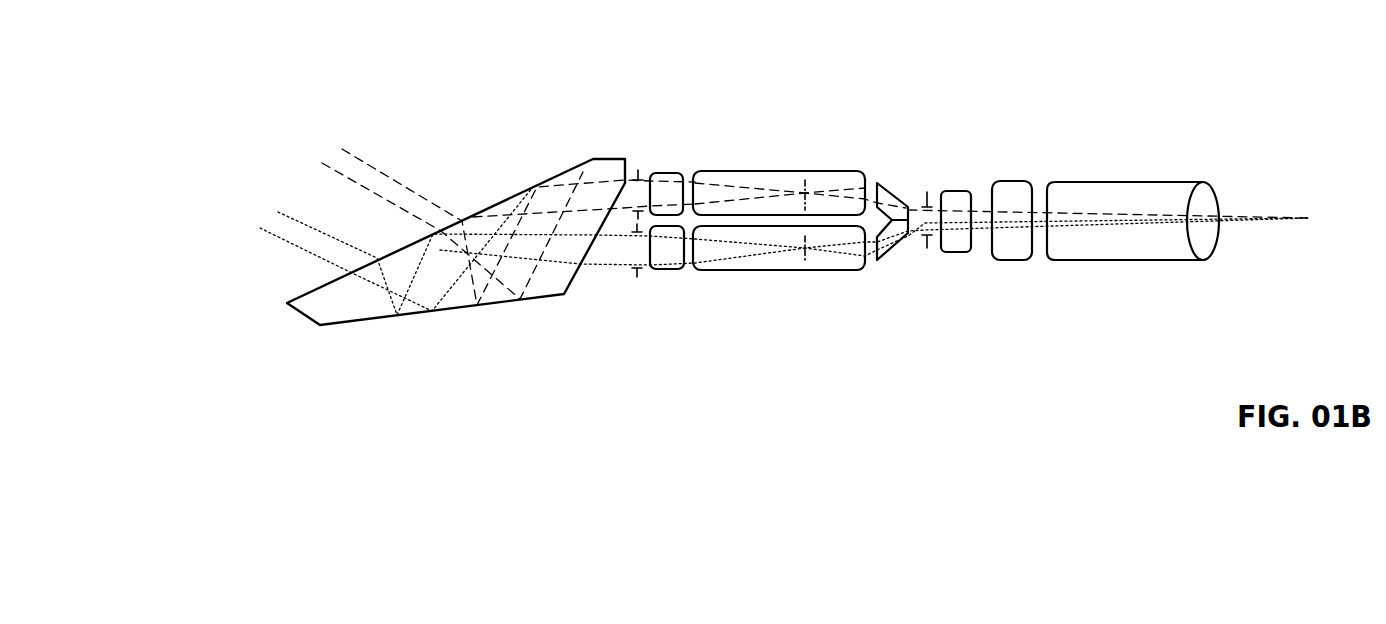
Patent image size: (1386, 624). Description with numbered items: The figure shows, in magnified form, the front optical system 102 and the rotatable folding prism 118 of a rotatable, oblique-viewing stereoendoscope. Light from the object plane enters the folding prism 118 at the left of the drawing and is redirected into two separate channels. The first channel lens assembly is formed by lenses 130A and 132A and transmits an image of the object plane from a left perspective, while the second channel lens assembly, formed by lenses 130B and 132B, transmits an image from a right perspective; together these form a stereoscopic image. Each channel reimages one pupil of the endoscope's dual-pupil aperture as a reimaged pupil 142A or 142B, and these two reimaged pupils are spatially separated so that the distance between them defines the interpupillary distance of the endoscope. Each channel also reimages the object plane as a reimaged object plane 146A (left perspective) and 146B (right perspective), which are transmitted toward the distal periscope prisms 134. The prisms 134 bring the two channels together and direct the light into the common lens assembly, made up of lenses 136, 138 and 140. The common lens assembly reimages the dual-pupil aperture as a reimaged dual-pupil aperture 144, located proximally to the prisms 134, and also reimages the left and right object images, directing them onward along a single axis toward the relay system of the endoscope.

The front optical system 102 is at (1150, 112).
The rotatable folding prism 118 is at (487, 311).
The lens 130A is at (675, 270).
The lens 130B is at (670, 172).
The lens 132A is at (747, 272).
The lens 132B is at (778, 171).
The distal periscope prisms 134 is at (900, 256).
The lens 136 is at (958, 253).
The lens 138 is at (1018, 262).
The lens 140 is at (1123, 261).
The reimaged pupil 142A is at (629, 280).
The reimaged pupil 142B is at (647, 154).
The reimaged dual-pupil aperture 144 is at (922, 180).
The reimaged object plane 146A is at (813, 256).
The reimaged object plane 146B is at (813, 186).